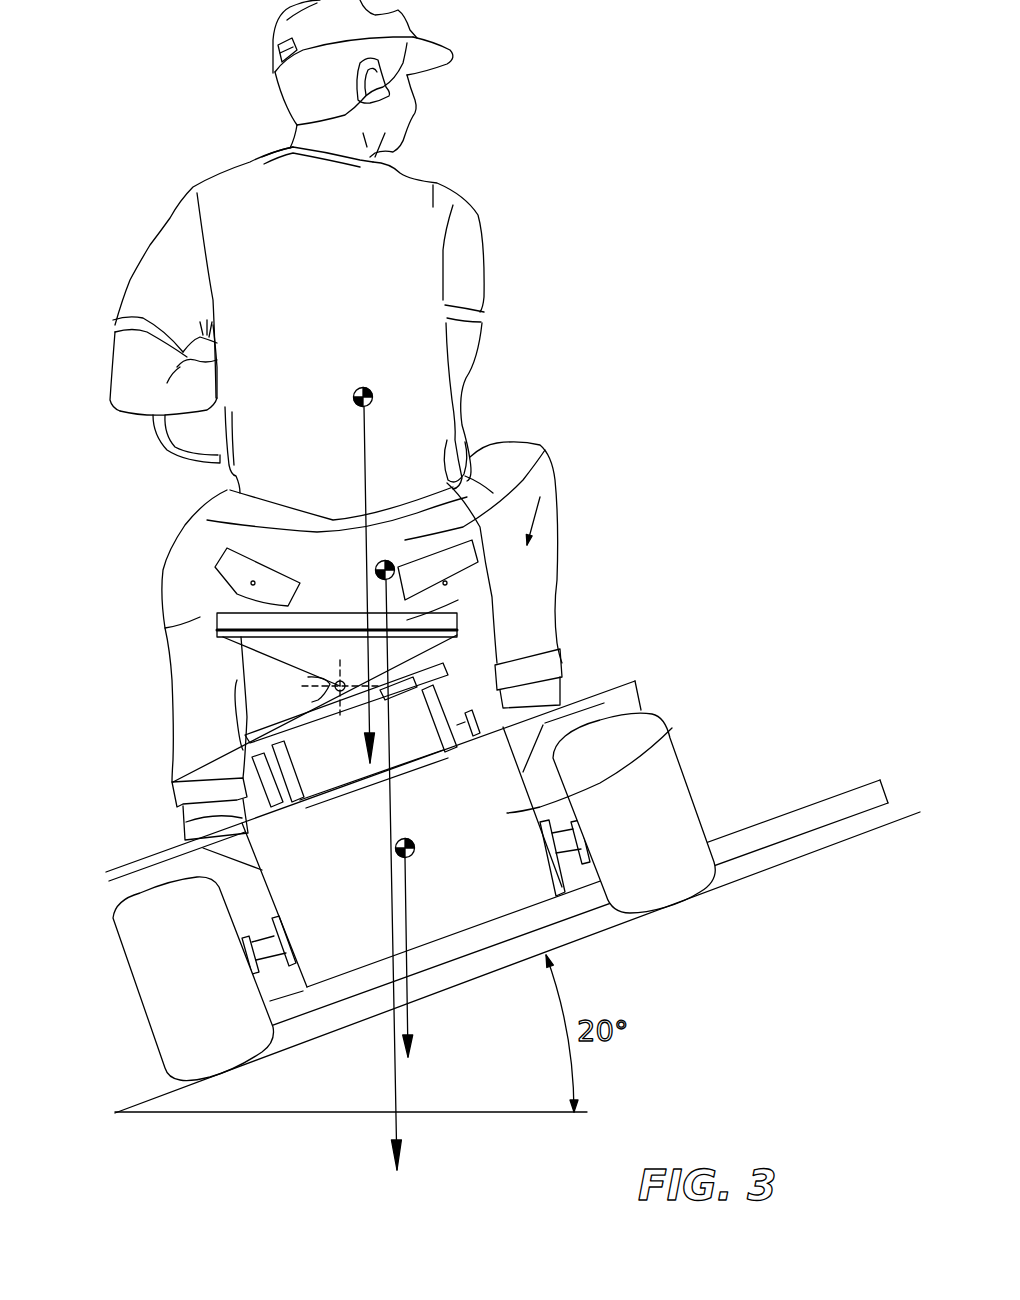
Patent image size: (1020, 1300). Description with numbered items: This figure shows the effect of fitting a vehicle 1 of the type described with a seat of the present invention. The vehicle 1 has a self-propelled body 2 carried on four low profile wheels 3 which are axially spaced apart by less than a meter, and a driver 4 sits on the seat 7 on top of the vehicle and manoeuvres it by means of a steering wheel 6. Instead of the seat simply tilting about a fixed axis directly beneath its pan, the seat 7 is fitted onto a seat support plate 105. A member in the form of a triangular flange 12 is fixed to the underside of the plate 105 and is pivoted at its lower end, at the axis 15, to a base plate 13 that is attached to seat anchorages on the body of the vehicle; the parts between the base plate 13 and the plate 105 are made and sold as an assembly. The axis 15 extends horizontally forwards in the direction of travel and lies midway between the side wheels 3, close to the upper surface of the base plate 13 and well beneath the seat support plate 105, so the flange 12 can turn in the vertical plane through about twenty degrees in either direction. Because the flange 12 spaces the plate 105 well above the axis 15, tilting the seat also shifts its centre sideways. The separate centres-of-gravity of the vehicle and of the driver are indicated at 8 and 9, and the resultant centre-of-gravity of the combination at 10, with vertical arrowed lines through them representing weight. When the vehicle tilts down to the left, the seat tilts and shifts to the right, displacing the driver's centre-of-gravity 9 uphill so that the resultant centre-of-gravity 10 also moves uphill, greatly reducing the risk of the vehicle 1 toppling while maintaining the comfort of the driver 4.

The vehicle 1 is at (688, 668).
The self-propelled body 2 is at (507, 813).
The low profile wheels 3 is at (663, 791).
The driver 4 is at (366, 585).
The steering wheel 6 is at (157, 440).
The seat 7 is at (232, 612).
The centre-of-gravity of the vehicle 8 is at (414, 848).
The centre-of-gravity of the driver 9 is at (364, 388).
The resultant centre-of-gravity 10 is at (547, 448).
The triangular flange 12 is at (290, 655).
The base plate 13 is at (247, 735).
The pivot axis 15 is at (342, 638).
The seat support plate 105 is at (217, 653).